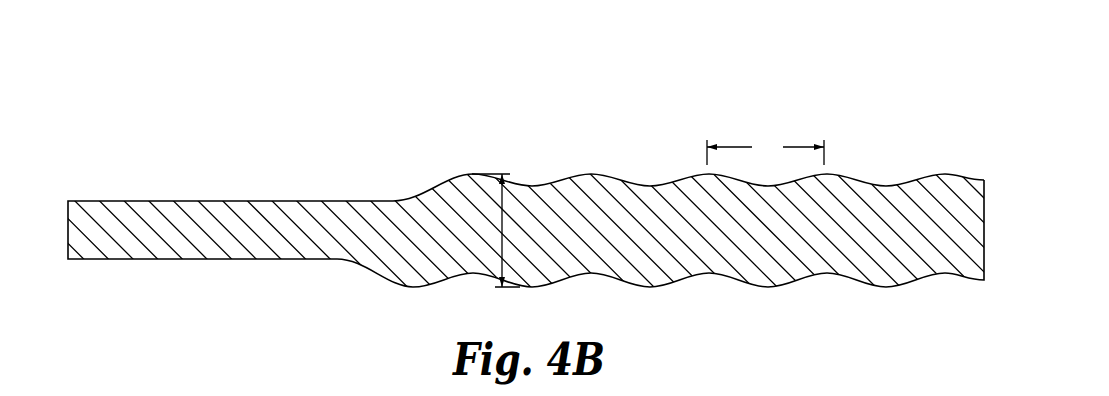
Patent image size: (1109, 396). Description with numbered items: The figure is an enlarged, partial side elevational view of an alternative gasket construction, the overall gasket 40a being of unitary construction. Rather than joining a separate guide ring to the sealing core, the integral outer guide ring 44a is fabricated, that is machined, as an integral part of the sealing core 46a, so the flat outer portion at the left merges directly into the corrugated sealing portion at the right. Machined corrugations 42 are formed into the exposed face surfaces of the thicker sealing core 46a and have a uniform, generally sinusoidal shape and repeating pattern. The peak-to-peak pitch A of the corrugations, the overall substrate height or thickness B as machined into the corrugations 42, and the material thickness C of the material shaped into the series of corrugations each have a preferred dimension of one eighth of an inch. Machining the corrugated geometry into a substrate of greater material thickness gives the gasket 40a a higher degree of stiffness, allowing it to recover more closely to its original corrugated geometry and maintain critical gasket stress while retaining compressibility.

The gasket 40a is at (539, 195).
The machined corrugations 42 is at (590, 172).
The integral outer guide ring 44a is at (203, 230).
The sealing core 46a is at (632, 233).
The peak-to-peak pitch A is at (765, 150).
The overall substrate height or thickness B is at (498, 230).
The material thickness C is at (838, 277).